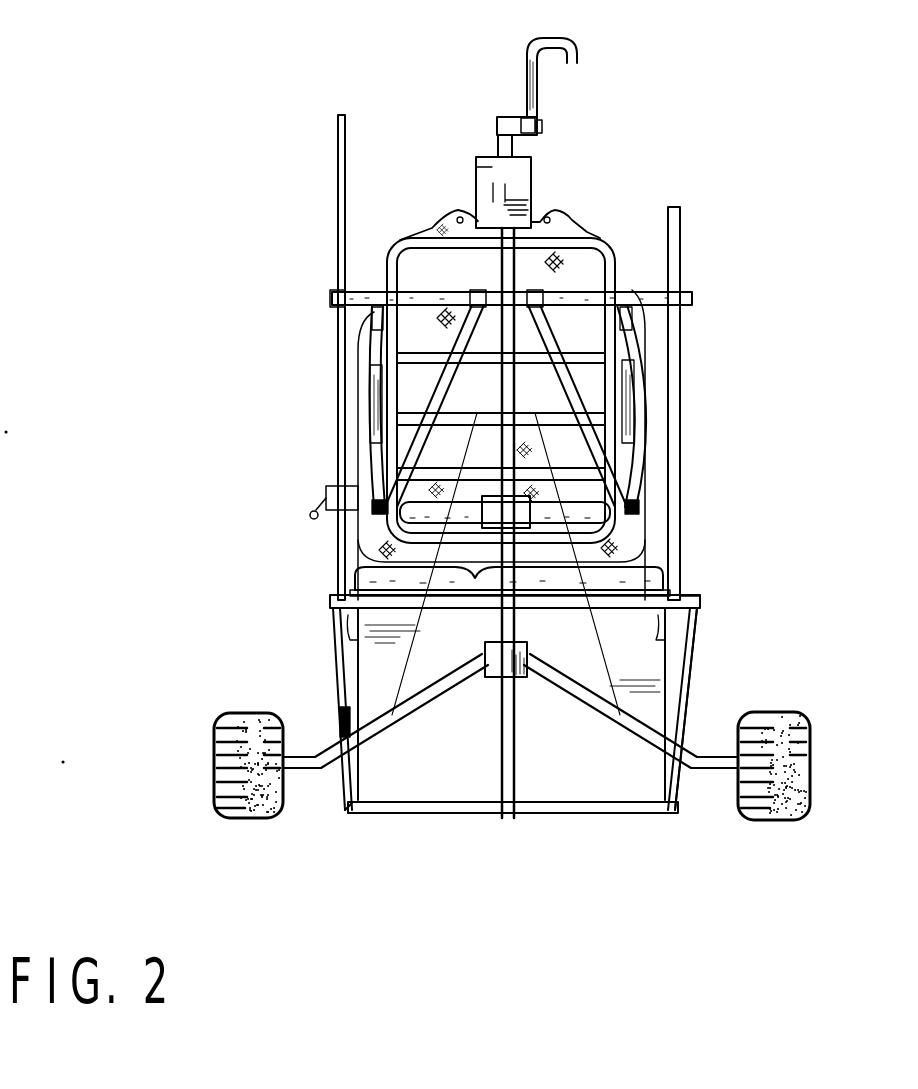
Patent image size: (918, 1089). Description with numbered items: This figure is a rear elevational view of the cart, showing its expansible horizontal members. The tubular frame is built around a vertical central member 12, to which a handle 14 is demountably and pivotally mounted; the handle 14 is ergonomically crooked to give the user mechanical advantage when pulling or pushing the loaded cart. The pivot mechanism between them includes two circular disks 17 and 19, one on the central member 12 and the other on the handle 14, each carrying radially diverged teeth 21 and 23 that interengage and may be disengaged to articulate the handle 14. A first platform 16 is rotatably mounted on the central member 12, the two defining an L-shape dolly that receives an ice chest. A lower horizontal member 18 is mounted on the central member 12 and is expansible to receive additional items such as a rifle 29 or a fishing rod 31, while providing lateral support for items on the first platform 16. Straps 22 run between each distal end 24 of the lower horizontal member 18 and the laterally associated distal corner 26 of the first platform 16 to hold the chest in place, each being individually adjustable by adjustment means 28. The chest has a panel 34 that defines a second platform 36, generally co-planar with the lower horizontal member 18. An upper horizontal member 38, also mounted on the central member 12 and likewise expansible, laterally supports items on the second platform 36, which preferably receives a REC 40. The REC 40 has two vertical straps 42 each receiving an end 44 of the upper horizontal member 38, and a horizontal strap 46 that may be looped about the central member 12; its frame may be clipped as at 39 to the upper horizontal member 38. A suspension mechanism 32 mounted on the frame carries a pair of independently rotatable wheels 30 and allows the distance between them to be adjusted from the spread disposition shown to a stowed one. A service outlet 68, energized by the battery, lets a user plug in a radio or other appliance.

The vertical central member 12 is at (514, 812).
The handle 14 is at (527, 80).
The first platform 16 is at (478, 813).
The circular disk 17 is at (508, 117).
The lower horizontal member 18 is at (700, 602).
The circular disk 19 is at (542, 128).
The radially diverged teeth 21 is at (498, 127).
The straps 22 is at (690, 650).
The radially diverged teeth 23 is at (535, 120).
The distal end 24 is at (330, 601).
The distal corner 26 is at (352, 813).
The adjustment means 28 is at (340, 720).
The rifle 29 is at (680, 348).
The wheels 30 is at (214, 792).
The fishing rod 31 is at (338, 214).
The suspension mechanism 32 is at (478, 718).
The panel 34 is at (665, 560).
The second platform 36 is at (663, 578).
The upper horizontal member 38 is at (692, 298).
The clip 39 is at (622, 285).
The REC 40 is at (604, 256).
The vertical straps 42 is at (645, 392).
The end 44 is at (330, 298).
The horizontal strap 46 is at (610, 478).
The service outlet 68 is at (476, 190).